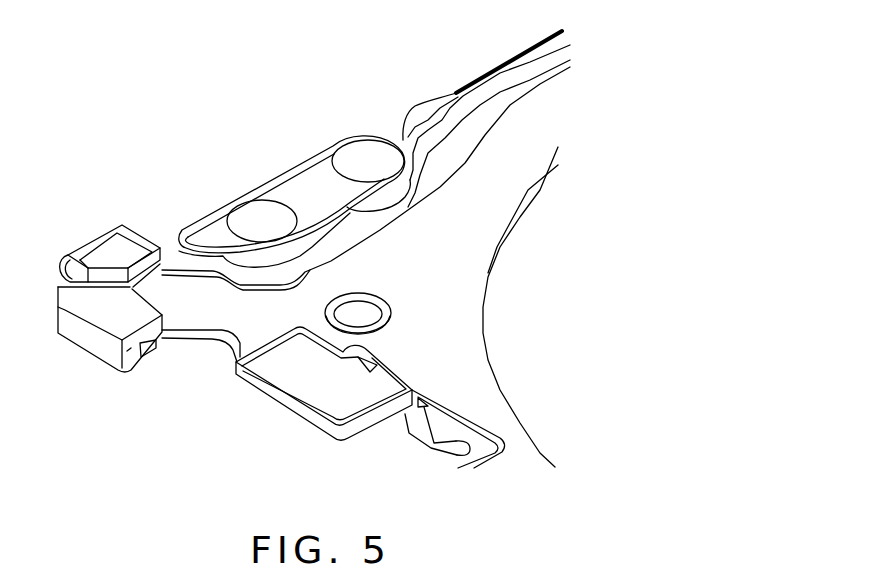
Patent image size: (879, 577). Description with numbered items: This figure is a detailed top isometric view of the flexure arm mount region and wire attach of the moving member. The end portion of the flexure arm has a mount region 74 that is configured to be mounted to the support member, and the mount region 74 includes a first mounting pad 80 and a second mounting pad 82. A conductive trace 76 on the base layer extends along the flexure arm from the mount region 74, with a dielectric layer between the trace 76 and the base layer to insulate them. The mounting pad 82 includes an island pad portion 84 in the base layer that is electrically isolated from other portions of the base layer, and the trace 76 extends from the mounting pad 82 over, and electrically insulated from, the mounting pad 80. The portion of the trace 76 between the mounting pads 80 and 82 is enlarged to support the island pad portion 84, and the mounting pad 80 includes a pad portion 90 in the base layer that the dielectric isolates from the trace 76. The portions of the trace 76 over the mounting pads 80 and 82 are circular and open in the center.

The mount region 74 is at (310, 137).
The conductive trace 76 is at (455, 93).
The first mounting pad 80 is at (355, 135).
The second mounting pad 82 is at (273, 166).
The island pad portion 84 is at (250, 222).
The pad portion 90 is at (368, 157).